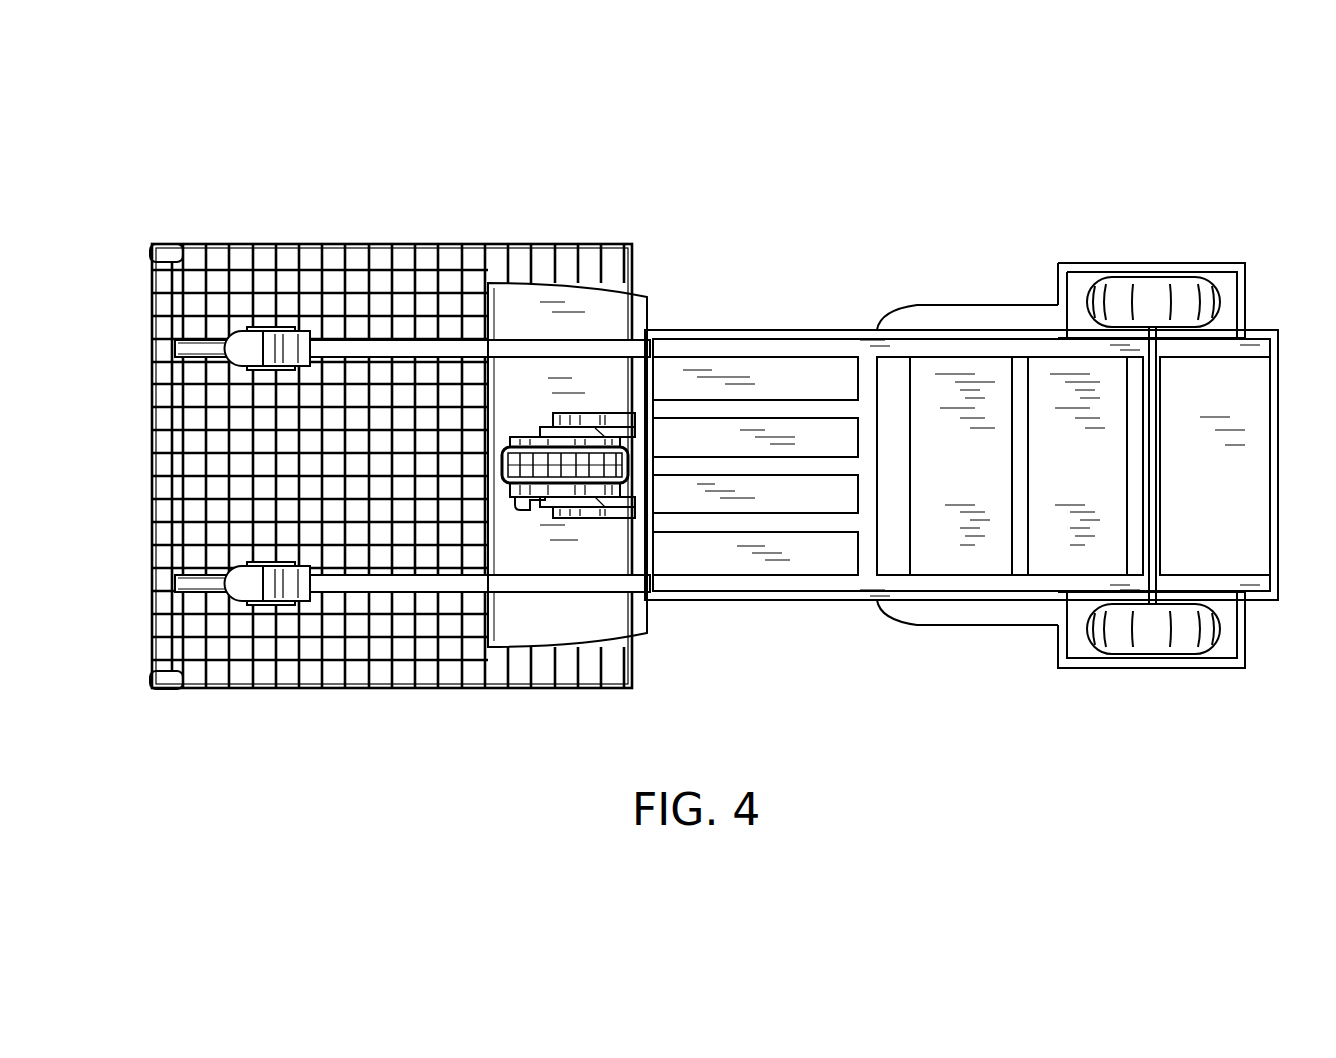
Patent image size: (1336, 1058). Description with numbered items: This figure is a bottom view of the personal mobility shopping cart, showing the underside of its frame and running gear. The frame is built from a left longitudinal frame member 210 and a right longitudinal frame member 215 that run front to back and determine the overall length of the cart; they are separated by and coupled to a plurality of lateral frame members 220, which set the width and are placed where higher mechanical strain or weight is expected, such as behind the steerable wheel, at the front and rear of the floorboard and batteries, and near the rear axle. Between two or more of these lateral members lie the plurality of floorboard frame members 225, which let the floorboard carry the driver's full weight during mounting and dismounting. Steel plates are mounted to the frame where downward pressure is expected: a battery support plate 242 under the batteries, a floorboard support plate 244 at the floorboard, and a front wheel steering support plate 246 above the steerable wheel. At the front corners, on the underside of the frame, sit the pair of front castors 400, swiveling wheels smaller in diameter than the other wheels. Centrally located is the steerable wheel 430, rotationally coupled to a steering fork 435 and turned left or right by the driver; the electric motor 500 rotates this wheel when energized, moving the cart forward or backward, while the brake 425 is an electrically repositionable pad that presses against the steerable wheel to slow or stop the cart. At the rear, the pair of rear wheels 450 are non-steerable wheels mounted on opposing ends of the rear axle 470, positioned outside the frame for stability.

The left longitudinal frame member 210 is at (770, 345).
The right longitudinal frame member 215 is at (818, 582).
The plurality of lateral frame members 220 is at (863, 543).
The plurality of floorboard frame members 225 is at (728, 472).
The battery support plate 242 is at (997, 523).
The floorboard support plate 244 is at (818, 375).
The front wheel steering support plate 246 is at (525, 393).
The pair of front castors 400 is at (287, 347).
The brake 425 is at (523, 507).
The steerable wheel 430 is at (505, 442).
The steering fork 435 is at (605, 417).
The pair of rear wheels 450 is at (1183, 302).
The rear axle 470 is at (1152, 543).
The electric motor 500 is at (570, 490).